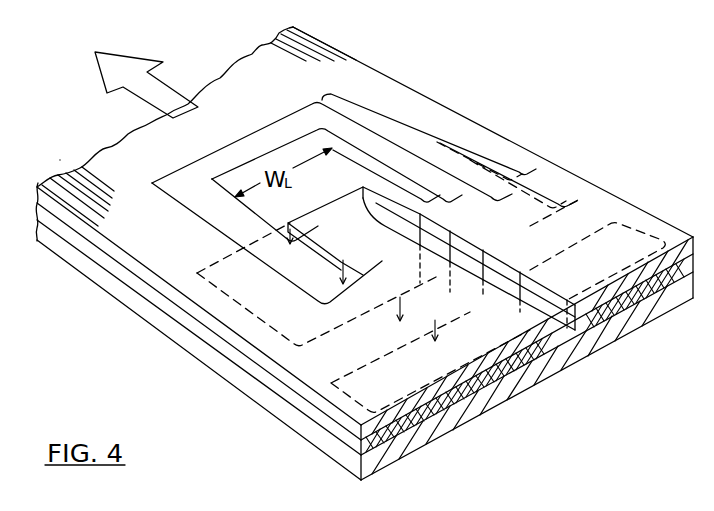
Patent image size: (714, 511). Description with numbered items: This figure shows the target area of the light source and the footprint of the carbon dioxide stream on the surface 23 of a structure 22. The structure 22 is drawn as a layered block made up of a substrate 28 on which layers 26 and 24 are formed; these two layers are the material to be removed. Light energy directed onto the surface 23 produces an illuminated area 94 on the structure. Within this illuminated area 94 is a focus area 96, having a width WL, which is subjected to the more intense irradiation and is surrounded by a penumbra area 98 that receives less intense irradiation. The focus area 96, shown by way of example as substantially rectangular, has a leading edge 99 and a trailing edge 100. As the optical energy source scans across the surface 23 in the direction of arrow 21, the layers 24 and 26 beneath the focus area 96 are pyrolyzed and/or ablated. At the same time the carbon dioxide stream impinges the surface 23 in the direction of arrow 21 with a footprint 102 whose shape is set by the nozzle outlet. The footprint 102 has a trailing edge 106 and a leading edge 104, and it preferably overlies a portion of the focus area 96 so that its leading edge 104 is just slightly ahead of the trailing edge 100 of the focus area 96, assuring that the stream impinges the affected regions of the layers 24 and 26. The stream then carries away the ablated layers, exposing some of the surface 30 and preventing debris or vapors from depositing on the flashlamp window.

The arrow 21 is at (147, 90).
The structure 22 is at (465, 111).
The surface 23 is at (85, 170).
The layer 24 is at (316, 399).
The layer 26 is at (326, 420).
The substrate 28 is at (343, 453).
The surface 30 is at (508, 336).
The illuminated area 94 is at (388, 118).
The focus area 96 is at (385, 158).
The penumbra area 98 is at (276, 130).
The leading edge 99 is at (220, 168).
The trailing edge 100 is at (401, 252).
The footprint 102 is at (526, 170).
The leading edge 104 is at (333, 197).
The trailing edge 106 is at (441, 296).